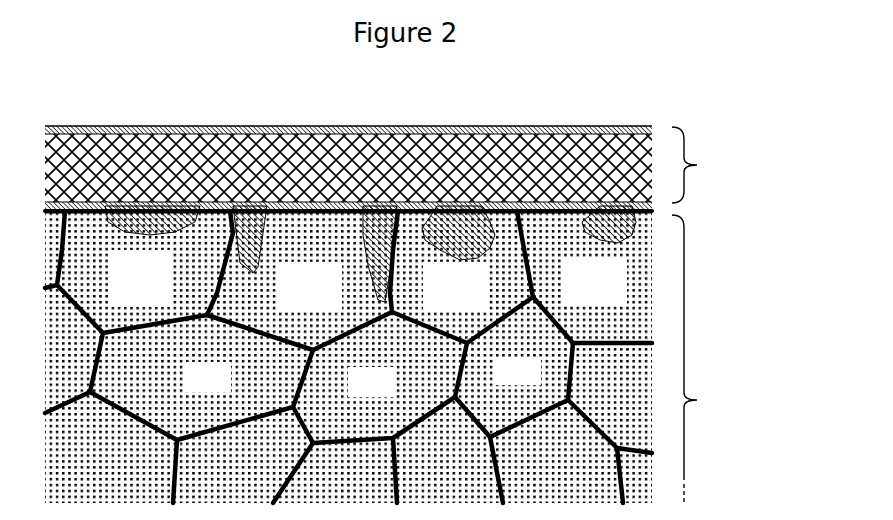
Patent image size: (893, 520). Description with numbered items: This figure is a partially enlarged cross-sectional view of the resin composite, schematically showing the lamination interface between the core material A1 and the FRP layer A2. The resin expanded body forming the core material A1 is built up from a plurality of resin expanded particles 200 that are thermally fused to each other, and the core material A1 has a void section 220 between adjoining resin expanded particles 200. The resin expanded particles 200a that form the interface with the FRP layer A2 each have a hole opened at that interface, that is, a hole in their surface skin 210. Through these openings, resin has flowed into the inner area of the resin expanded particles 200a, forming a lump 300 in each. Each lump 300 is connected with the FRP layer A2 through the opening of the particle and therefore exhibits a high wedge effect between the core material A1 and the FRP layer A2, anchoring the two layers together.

The surface skin 210 is at (520, 178).
The resin expanded particles 200 is at (348, 357).
The resin expanded particles forming the interface 200a is at (348, 263).
The void section 220 is at (614, 440).
The lump 300 is at (622, 253).
The core material A1 is at (703, 359).
The FRP layer A2 is at (702, 165).